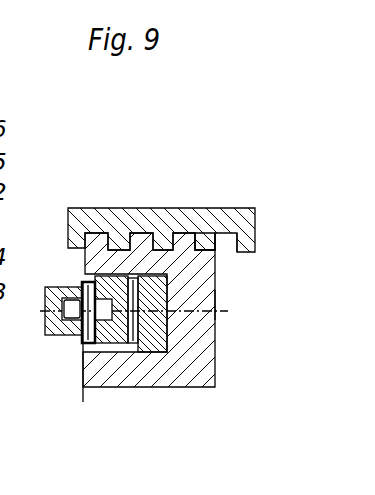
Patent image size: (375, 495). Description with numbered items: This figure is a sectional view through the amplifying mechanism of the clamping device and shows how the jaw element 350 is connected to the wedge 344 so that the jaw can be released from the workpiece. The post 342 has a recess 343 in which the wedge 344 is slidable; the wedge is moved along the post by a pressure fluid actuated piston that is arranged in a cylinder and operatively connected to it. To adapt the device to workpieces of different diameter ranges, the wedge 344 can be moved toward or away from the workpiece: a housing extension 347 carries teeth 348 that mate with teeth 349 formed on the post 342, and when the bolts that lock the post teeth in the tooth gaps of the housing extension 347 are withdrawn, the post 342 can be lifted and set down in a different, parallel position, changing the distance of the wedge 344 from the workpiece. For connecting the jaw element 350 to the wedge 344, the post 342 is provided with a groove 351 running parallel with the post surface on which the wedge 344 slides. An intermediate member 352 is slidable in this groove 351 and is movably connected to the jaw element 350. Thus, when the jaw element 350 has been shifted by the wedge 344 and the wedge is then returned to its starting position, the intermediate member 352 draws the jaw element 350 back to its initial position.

The post 342 is at (215, 298).
The recess 343 is at (90, 345).
The wedge 344 is at (188, 383).
The housing extension 347 is at (243, 223).
The teeth 348 is at (222, 255).
The teeth 349 is at (202, 250).
The jaw element 350 is at (55, 337).
The groove 351 is at (140, 348).
The intermediate member 352 is at (72, 337).